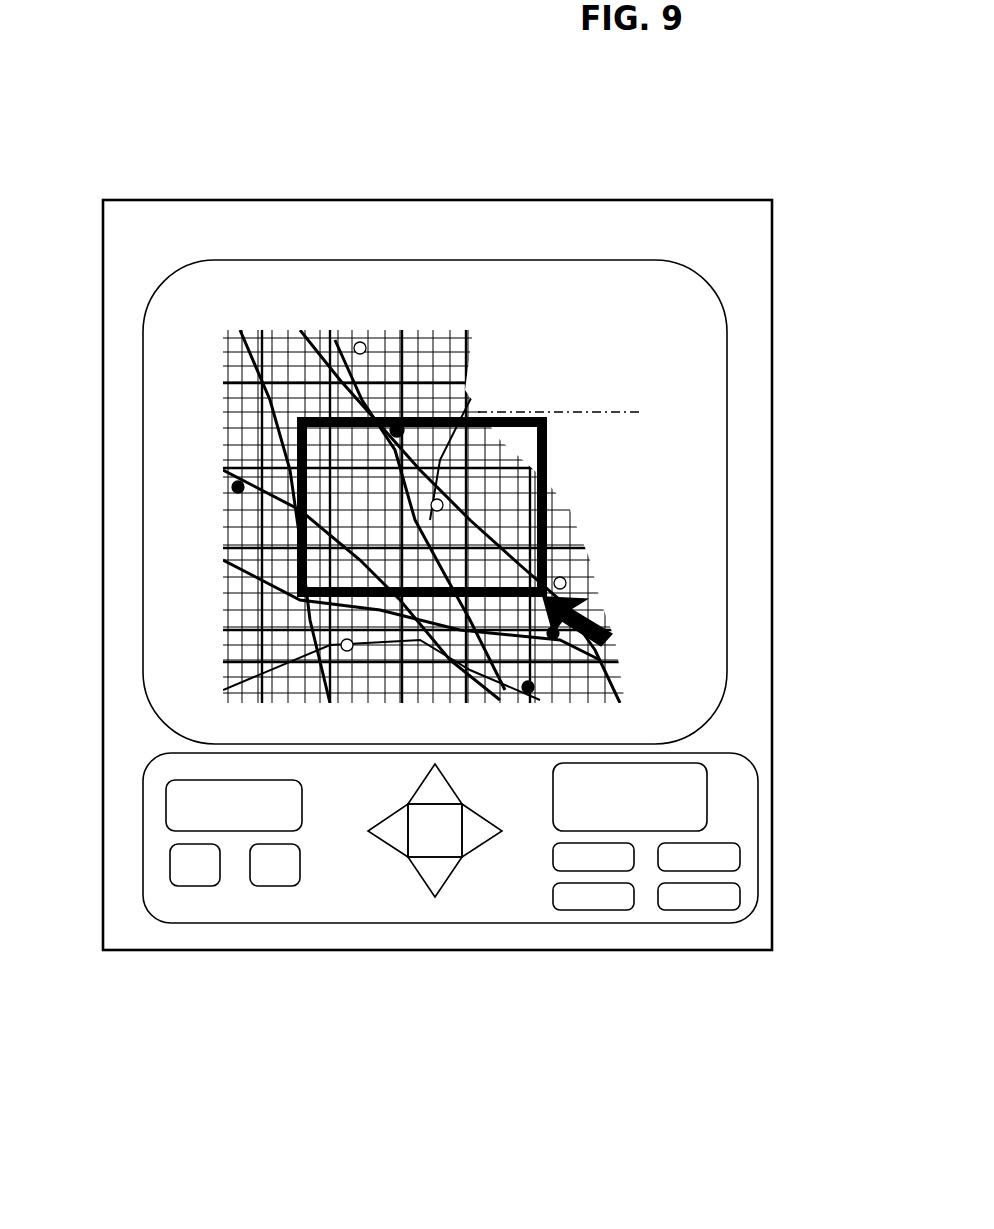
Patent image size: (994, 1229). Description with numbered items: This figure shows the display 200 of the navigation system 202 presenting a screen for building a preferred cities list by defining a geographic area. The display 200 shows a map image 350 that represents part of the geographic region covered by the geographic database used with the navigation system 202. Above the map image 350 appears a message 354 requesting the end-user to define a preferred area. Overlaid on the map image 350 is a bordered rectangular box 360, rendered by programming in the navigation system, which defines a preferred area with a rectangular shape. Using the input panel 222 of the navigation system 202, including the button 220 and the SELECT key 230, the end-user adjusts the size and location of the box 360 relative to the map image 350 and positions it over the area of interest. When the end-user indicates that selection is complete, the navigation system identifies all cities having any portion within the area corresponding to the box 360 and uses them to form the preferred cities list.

The navigation system 202 is at (230, 188).
The display 200 is at (132, 433).
The message 354 is at (247, 303).
The map image 350 is at (628, 467).
The bordered rectangular box 360 is at (555, 495).
The input panel 222 is at (290, 902).
The button 220 is at (412, 872).
The SELECT key 230 is at (713, 802).